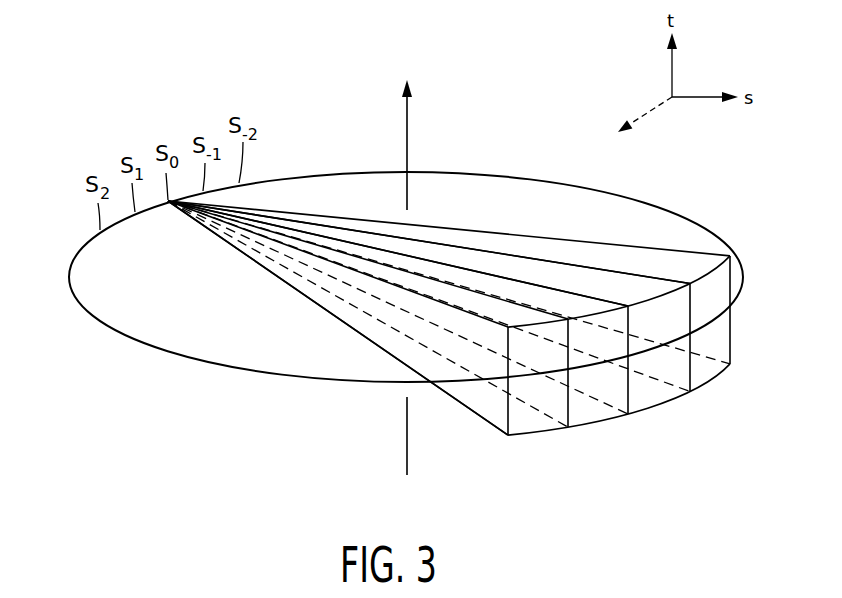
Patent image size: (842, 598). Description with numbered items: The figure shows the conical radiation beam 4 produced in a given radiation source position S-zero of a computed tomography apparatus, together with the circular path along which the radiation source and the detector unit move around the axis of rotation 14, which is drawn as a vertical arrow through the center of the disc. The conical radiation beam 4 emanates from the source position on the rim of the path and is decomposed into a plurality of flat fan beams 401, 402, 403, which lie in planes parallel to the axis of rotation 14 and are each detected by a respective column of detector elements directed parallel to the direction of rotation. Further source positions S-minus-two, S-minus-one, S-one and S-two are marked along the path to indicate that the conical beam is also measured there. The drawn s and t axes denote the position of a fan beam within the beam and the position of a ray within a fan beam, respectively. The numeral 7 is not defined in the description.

The conical radiation beam 4 is at (687, 258).
The field of view disk 7 is at (523, 176).
The axis of rotation 14 is at (409, 128).
The fan beam 401 is at (375, 268).
The fan beam 402 is at (555, 287).
The fan beam 403 is at (497, 252).